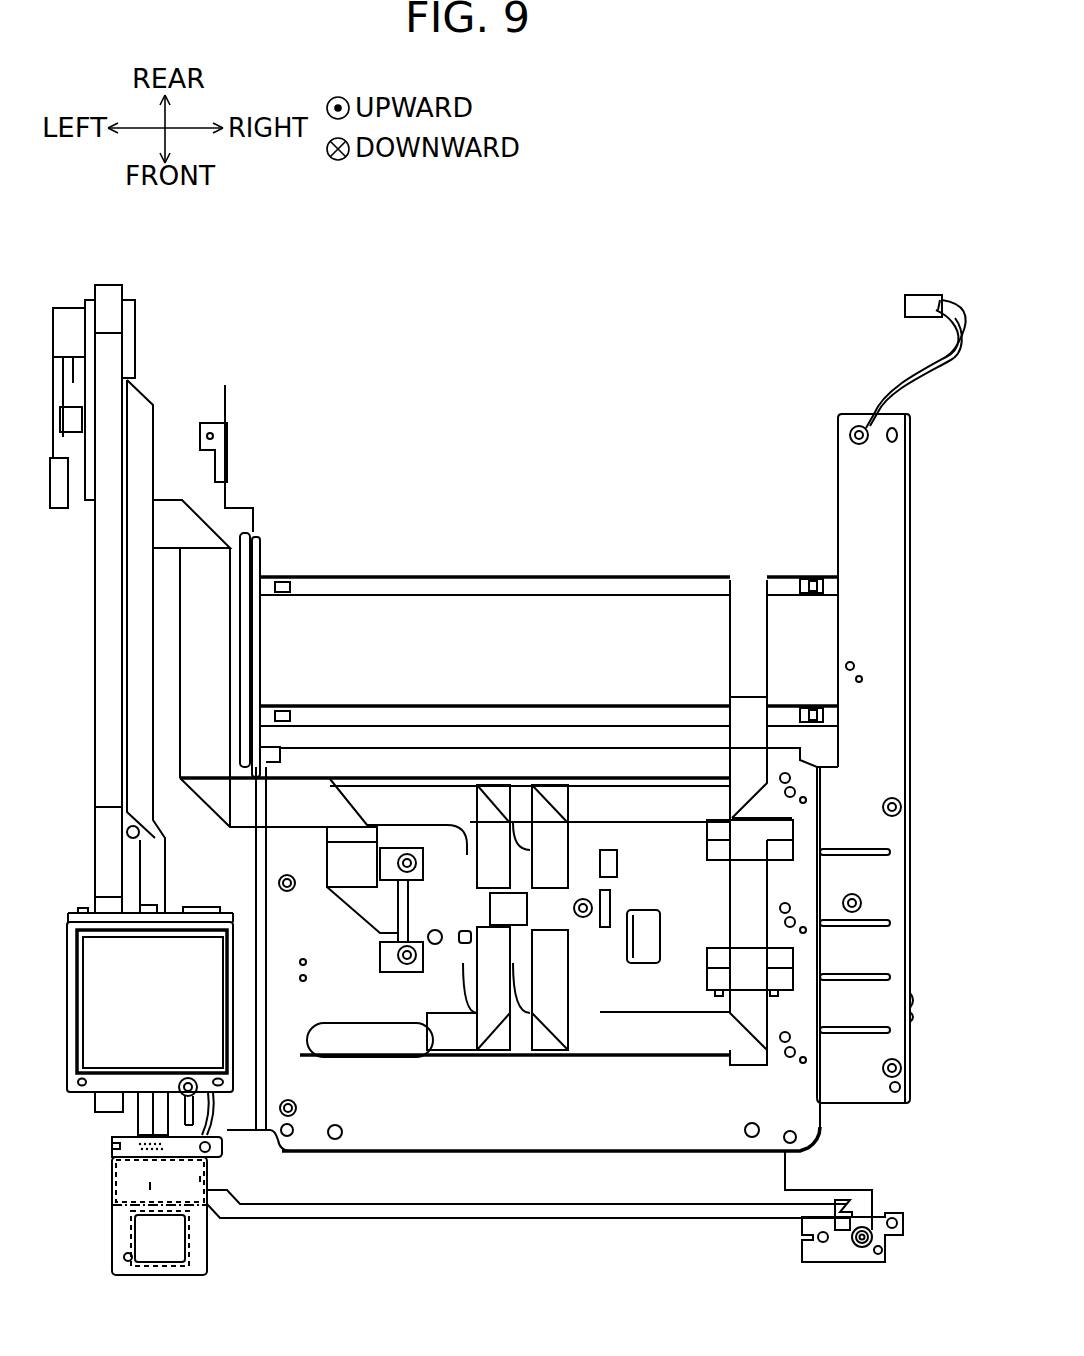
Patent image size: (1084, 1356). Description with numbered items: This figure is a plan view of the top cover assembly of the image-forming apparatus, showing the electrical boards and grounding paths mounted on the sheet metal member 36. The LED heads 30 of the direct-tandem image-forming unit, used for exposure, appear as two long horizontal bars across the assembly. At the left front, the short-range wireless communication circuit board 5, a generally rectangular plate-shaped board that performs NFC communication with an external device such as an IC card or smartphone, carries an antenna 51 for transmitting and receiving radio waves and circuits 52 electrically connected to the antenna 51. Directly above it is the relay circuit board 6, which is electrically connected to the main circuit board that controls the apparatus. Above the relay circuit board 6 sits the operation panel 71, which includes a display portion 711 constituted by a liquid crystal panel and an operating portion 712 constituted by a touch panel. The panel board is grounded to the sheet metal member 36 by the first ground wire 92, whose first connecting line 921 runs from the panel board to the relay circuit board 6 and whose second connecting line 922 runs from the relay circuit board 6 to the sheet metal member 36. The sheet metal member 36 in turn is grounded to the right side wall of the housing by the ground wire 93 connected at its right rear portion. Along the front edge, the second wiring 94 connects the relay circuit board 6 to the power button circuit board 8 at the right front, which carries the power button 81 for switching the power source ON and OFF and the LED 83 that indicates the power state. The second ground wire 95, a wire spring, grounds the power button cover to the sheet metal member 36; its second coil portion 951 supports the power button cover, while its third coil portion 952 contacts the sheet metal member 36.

The short-range wireless communication circuit board 5 is at (162, 1224).
The antenna 51 is at (130, 1222).
The circuits 52 is at (207, 1222).
The relay circuit board 6 is at (107, 1145).
The power button circuit board 8 is at (863, 1256).
The power button 81 is at (862, 1248).
The LED 83 is at (822, 1243).
The LED heads 30 is at (551, 583).
The sheet metal member 36 is at (424, 1138).
The operation panel 71 is at (213, 982).
The display portion 711 is at (221, 1000).
The operating portion 712 is at (207, 957).
The first ground wire 92 is at (222, 1112).
The first connecting line 921 is at (182, 1113).
The second connecting line 922 is at (238, 1137).
The ground wire 93 is at (896, 371).
The second wiring 94 is at (480, 1210).
The second ground wire 95 is at (874, 1188).
The second coil portion 951 is at (897, 1237).
The third coil portion 952 is at (788, 1130).